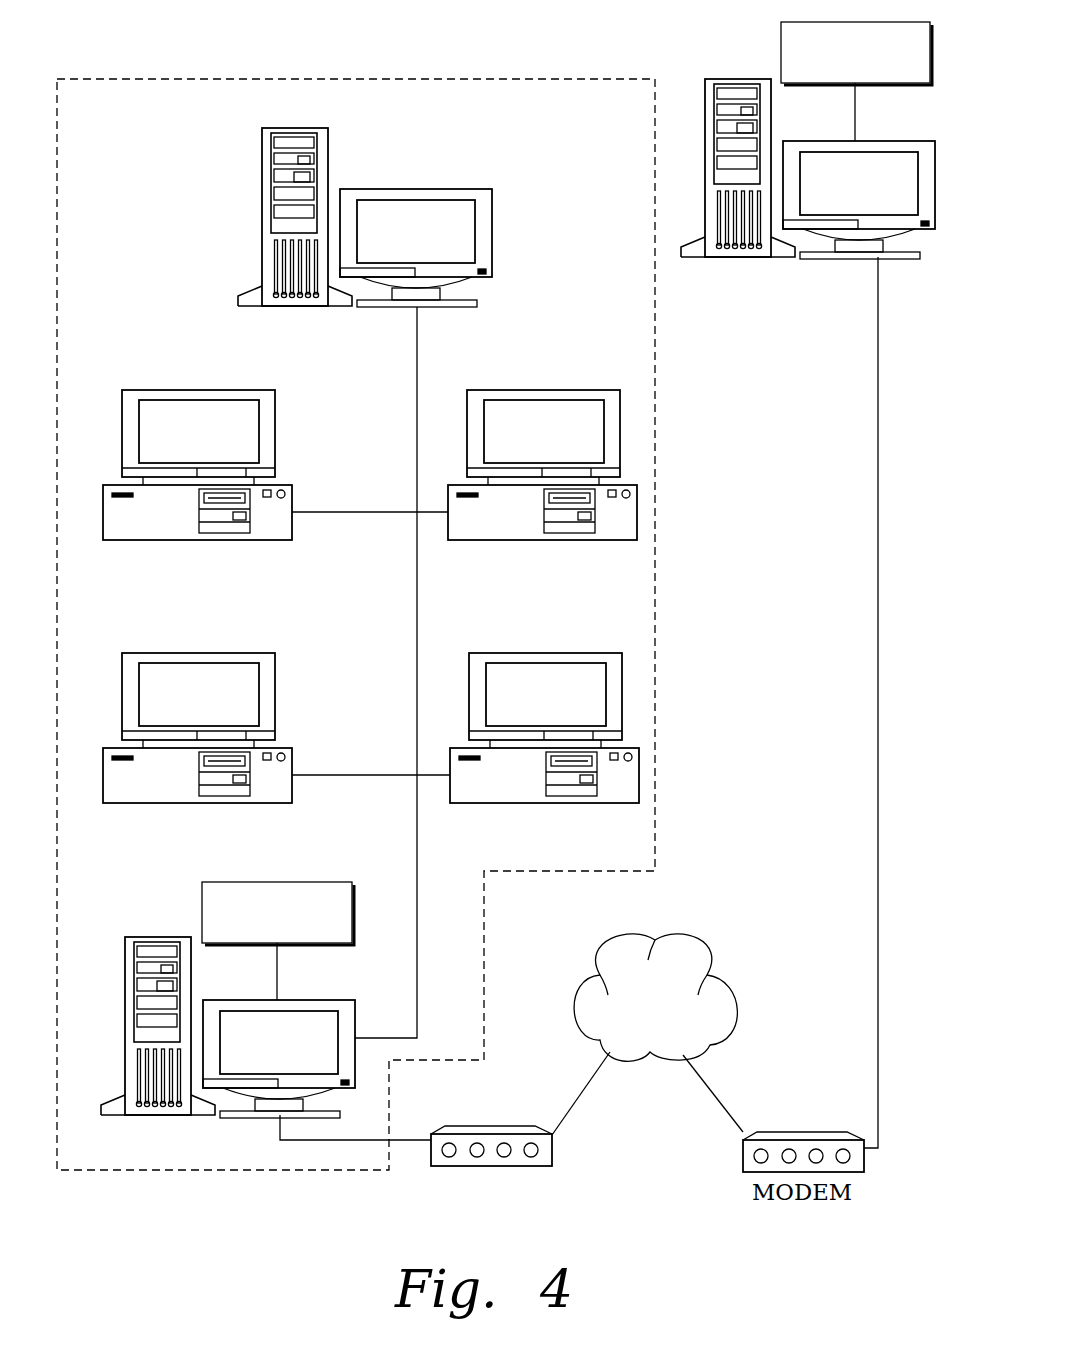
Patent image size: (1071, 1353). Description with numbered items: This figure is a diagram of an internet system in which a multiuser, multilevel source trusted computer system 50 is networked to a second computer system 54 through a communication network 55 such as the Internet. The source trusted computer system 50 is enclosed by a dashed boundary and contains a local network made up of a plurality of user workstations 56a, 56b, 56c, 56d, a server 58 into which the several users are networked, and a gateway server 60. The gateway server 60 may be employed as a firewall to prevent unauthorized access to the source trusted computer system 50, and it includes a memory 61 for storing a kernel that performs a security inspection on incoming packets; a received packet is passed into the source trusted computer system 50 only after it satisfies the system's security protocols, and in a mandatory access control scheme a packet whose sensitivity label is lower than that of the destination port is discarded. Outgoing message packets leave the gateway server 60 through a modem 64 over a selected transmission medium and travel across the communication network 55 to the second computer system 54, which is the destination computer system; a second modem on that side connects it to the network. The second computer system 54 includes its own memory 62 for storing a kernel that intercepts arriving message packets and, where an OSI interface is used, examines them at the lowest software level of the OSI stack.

The source trusted computer system 50 is at (528, 78).
The second computer system 54 is at (722, 78).
The communication network 55 is at (641, 1034).
The user workstation 56a is at (177, 389).
The user workstation 56b is at (522, 389).
The user workstation 56c is at (177, 651).
The user workstation 56d is at (522, 651).
The server 58 is at (279, 127).
The gateway server 60 is at (141, 936).
The memory 61 is at (202, 915).
The memory 62 is at (781, 56).
The modem 64 is at (500, 1118).